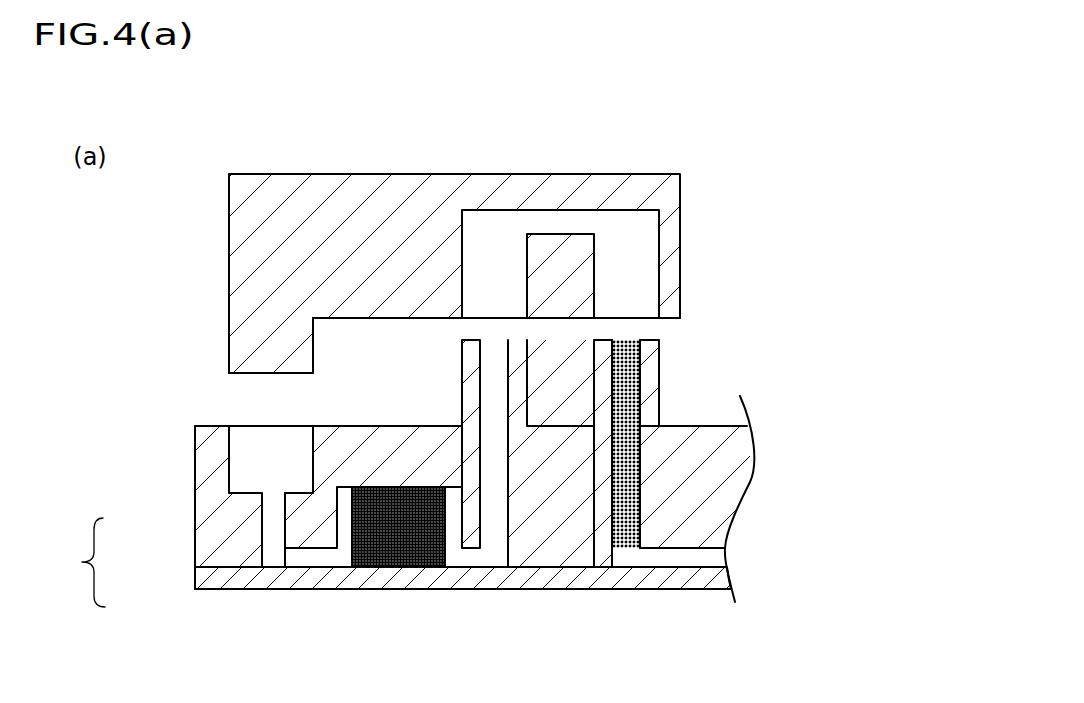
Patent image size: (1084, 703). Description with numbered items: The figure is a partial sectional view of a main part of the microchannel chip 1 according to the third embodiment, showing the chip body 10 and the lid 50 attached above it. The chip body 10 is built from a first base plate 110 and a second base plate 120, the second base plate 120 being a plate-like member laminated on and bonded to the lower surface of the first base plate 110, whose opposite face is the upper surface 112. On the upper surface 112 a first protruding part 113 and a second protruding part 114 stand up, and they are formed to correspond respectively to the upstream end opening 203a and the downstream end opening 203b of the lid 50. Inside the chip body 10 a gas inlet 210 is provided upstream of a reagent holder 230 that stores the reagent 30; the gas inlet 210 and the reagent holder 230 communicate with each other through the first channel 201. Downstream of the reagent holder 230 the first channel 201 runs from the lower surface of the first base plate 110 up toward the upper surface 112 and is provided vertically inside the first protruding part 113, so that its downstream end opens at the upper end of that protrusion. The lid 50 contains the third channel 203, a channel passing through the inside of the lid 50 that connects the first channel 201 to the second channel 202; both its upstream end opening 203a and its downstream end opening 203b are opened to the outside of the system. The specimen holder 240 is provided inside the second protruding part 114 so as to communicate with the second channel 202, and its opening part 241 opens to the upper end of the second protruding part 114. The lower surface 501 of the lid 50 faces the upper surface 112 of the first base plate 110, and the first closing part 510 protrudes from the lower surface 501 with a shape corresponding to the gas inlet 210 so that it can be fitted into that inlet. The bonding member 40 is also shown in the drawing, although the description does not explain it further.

The microchannel chip 1 is at (197, 263).
The chip body 10 is at (71, 562).
The first base plate 110 is at (193, 545).
The upper surface 112 is at (713, 425).
The first protruding part 113 is at (472, 377).
The second protruding part 114 is at (602, 357).
The second base plate 120 is at (193, 582).
The reagent 30 is at (402, 548).
The bonding member 40 is at (615, 492).
The lid 50 is at (330, 183).
The lower surface 501 is at (395, 318).
The first closing part 510 is at (270, 358).
The first channel 201 is at (343, 558).
The second channel 202 is at (672, 558).
The third channel 203 is at (557, 223).
The upstream end opening 203a is at (502, 317).
The downstream end opening 203b is at (621, 317).
The gas inlet 210 is at (270, 458).
The reagent holder 230 is at (345, 503).
The specimen holder 240 is at (643, 397).
The opening part 241 is at (633, 341).